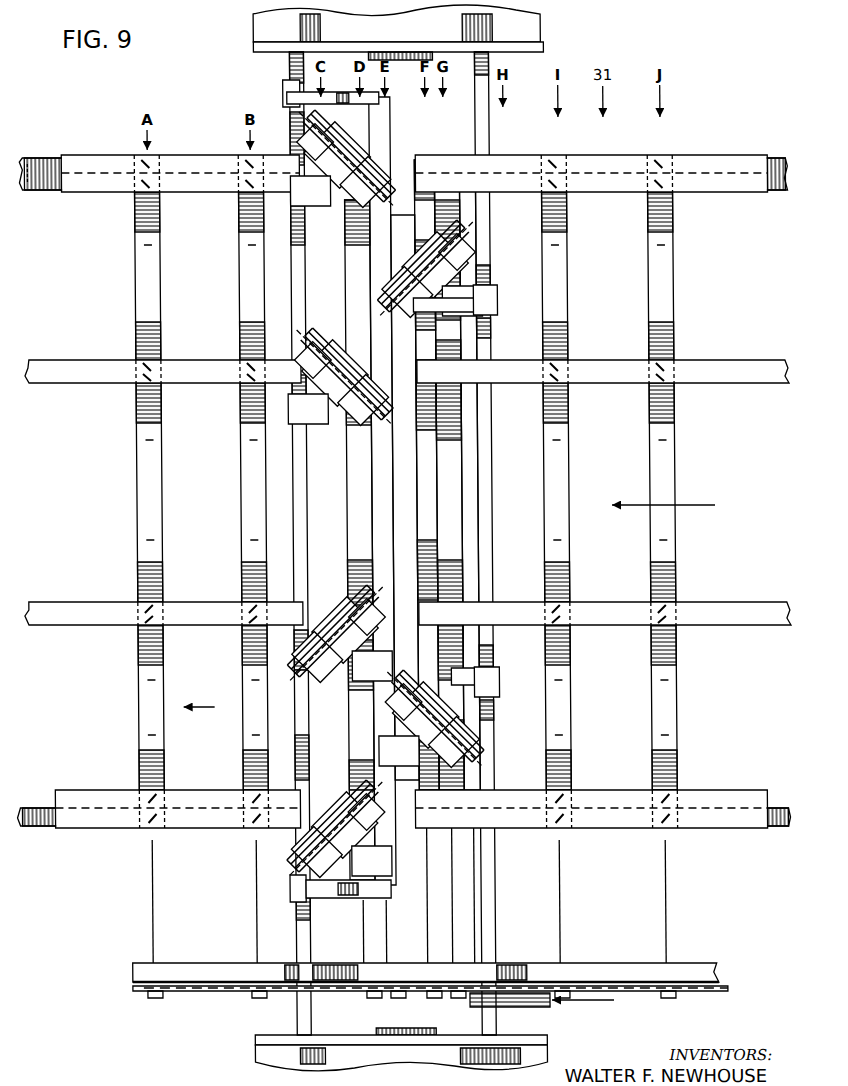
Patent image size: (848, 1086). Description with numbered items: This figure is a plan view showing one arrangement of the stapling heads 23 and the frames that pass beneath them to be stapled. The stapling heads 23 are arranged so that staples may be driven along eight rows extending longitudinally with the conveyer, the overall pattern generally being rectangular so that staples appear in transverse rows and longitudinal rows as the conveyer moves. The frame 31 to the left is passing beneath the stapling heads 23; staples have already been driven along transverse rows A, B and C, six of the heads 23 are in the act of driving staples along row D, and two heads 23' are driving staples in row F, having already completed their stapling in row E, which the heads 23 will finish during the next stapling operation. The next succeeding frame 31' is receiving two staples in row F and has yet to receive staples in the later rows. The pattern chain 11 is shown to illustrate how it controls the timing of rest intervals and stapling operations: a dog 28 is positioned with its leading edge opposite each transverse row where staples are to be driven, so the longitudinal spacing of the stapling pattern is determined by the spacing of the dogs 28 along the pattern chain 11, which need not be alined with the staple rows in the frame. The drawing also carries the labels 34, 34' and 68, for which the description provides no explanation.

The frame 31 is at (159, 151).
The next succeeding frame 31' is at (601, 149).
The threaded bar end 34 is at (33, 190).
The threaded bar end 34' is at (159, 793).
The set screws 68 is at (146, 180).
The stapling heads 23 is at (354, 491).
The stapling heads 23' is at (438, 495).
The pattern chain 11 is at (193, 993).
The dog 28 is at (394, 994).